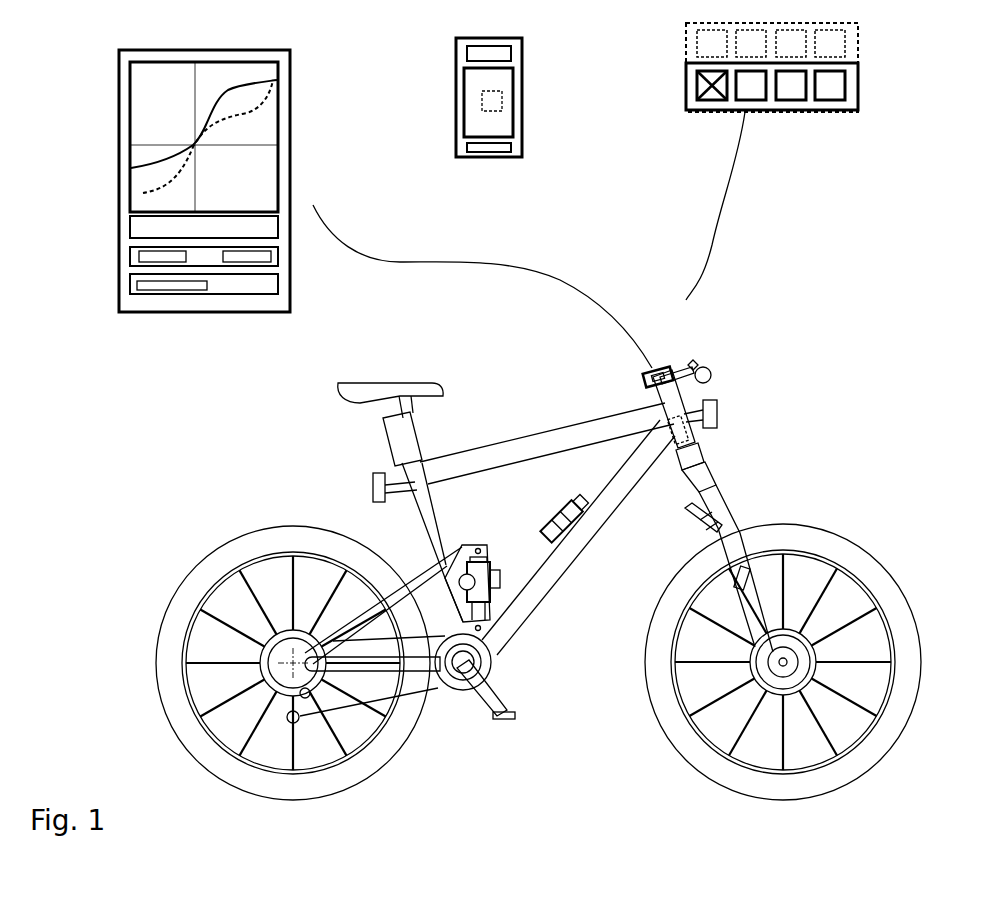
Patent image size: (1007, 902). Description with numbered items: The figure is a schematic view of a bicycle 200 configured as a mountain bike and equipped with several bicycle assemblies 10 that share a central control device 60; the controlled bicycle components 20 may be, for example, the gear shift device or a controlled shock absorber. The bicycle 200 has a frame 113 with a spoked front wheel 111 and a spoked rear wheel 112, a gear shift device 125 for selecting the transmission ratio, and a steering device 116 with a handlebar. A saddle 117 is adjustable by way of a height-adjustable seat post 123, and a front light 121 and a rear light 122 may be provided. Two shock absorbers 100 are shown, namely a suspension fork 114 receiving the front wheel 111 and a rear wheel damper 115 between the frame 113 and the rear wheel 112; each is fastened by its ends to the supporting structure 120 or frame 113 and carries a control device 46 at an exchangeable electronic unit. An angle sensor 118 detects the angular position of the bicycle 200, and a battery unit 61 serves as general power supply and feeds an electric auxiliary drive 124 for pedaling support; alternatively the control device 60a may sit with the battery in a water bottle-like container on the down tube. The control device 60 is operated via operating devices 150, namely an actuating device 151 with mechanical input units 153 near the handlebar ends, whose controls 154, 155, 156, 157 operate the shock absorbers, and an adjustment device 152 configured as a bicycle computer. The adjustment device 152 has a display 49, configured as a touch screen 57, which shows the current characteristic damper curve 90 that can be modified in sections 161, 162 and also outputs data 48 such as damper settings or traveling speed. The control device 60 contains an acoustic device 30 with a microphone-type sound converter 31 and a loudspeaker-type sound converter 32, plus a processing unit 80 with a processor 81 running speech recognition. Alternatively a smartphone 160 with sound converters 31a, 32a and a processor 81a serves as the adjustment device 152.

The bicycle assembly 10 is at (838, 392).
The bicycle component 20 is at (378, 442).
The acoustic device 30 is at (130, 265).
The sound converter 31 is at (158, 260).
The sound converter 32 is at (251, 260).
The sound converter 31a is at (488, 148).
The sound converter 32a is at (486, 51).
The control device 46 is at (505, 577).
The data 48 is at (132, 228).
The display 49 is at (177, 80).
The touch screen 57 is at (263, 163).
The control device 60 is at (120, 302).
The control device 60a is at (565, 503).
The battery unit 61 is at (546, 518).
The processing unit 80 is at (291, 286).
The processor 81 is at (160, 285).
The processor 81a is at (504, 100).
The characteristic damper curve 90 is at (141, 191).
The shock absorber 100 is at (493, 593).
The front wheel 111 is at (860, 532).
The rear wheel 112 is at (160, 618).
The frame 113 is at (530, 447).
The suspension fork 114 is at (757, 542).
The rear wheel damper 115 is at (489, 565).
The steering device 116 is at (708, 362).
The saddle 117 is at (428, 380).
The angle sensor 118 is at (666, 427).
The supporting structure 120 is at (722, 438).
The front light 121 is at (718, 410).
The rear light 122 is at (372, 487).
The seat post 123 is at (395, 432).
The electric auxiliary drive 124 is at (485, 664).
The gear shift device 125 is at (283, 719).
The operating device 150 is at (108, 85).
The actuating device 151 is at (865, 90).
The adjustment device 152 is at (295, 91).
The mechanical input unit 153 is at (682, 84).
The control 154 is at (708, 101).
The control 155 is at (748, 101).
The control 156 is at (793, 101).
The fourth icon 157 is at (833, 101).
The smartphone 160 is at (455, 56).
The section 161 is at (215, 158).
The section 162 is at (251, 124).
The bicycle 200 is at (185, 445).